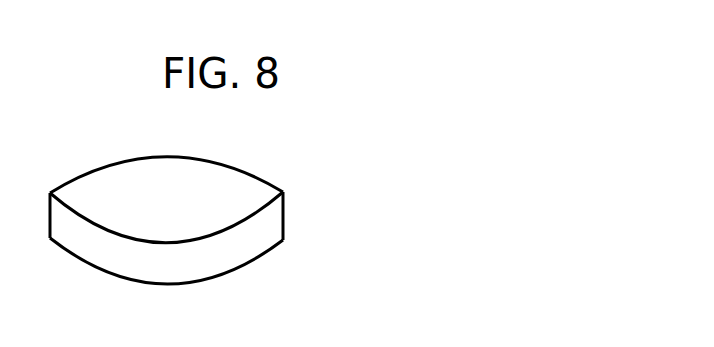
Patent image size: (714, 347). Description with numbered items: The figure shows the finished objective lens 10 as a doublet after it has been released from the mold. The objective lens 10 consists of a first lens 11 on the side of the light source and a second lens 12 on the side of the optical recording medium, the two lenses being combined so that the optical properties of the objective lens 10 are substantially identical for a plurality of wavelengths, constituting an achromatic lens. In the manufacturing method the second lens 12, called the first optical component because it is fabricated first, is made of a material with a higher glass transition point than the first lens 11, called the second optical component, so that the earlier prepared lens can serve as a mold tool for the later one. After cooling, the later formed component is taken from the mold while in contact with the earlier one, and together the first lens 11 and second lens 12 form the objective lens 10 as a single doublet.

The objective lens 10 is at (336, 212).
The first lens 11 is at (243, 169).
The second lens 12 is at (285, 208).